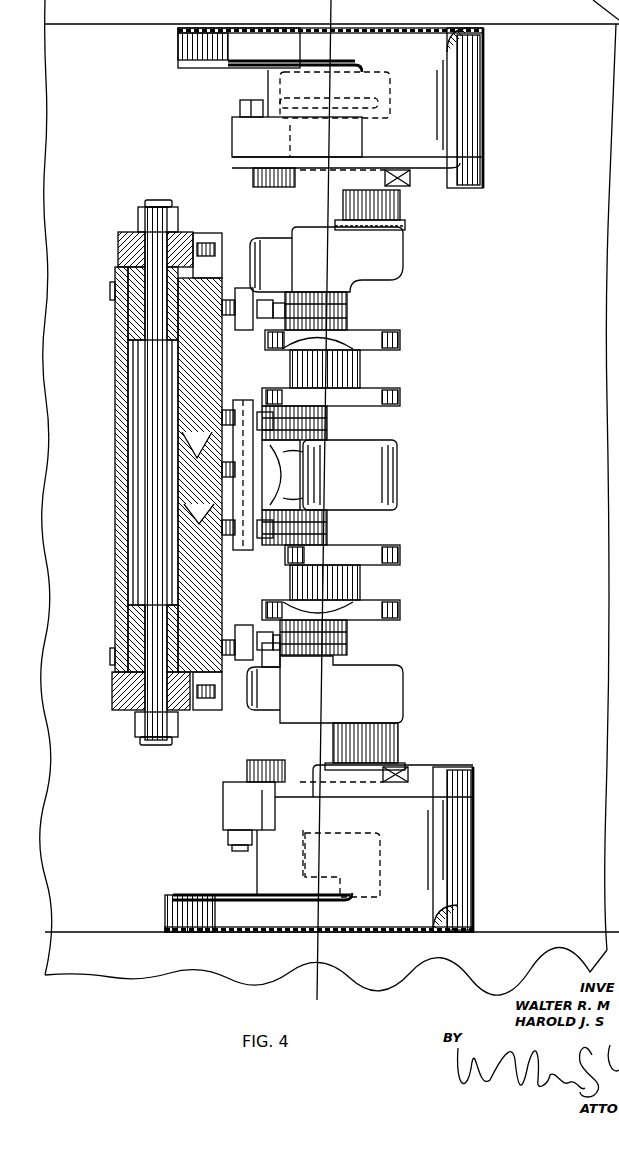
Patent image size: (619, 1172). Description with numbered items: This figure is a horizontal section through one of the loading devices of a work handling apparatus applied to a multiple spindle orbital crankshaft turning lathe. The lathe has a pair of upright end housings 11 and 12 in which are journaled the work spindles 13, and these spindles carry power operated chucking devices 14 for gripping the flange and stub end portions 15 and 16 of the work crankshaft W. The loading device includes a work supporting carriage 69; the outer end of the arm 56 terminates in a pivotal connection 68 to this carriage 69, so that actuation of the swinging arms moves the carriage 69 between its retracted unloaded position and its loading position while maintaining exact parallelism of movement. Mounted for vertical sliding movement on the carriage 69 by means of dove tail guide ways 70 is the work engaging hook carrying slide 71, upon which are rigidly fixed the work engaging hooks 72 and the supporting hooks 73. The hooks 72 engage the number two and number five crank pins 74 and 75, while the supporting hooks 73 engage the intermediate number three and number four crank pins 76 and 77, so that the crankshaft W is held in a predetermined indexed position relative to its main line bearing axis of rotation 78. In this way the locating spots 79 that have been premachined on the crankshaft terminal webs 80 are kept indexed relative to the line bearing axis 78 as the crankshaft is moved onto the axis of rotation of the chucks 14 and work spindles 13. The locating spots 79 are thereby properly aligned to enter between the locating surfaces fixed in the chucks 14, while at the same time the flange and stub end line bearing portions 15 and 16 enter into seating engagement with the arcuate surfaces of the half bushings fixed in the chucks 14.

The upright end housing 11 is at (104, 14).
The upright end housing 12 is at (82, 937).
The work spindle 13 is at (484, 52).
The power operated chucking device 14 is at (484, 126).
The flange end portion 15 is at (300, 139).
The stub end portion 16 is at (275, 807).
The arm 56 is at (118, 246).
The pivotal connection 68 is at (130, 528).
The work supporting carriage 69 is at (115, 368).
The dove tail guide way 70 is at (208, 438).
The work engaging hook carrying slide 71 is at (222, 372).
The work engaging hook 72 is at (275, 302).
The supporting hook 73 is at (257, 548).
The crank pin 74 is at (347, 640).
The crank pin 75 is at (347, 316).
The intermediate crank pin 76 is at (327, 528).
The intermediate crank pin 77 is at (327, 430).
The main line bearing axis of rotation 78 is at (325, 743).
The locating spot 79 is at (404, 175).
The crankshaft terminal web 80 is at (253, 181).
The work crankshaft W is at (400, 474).